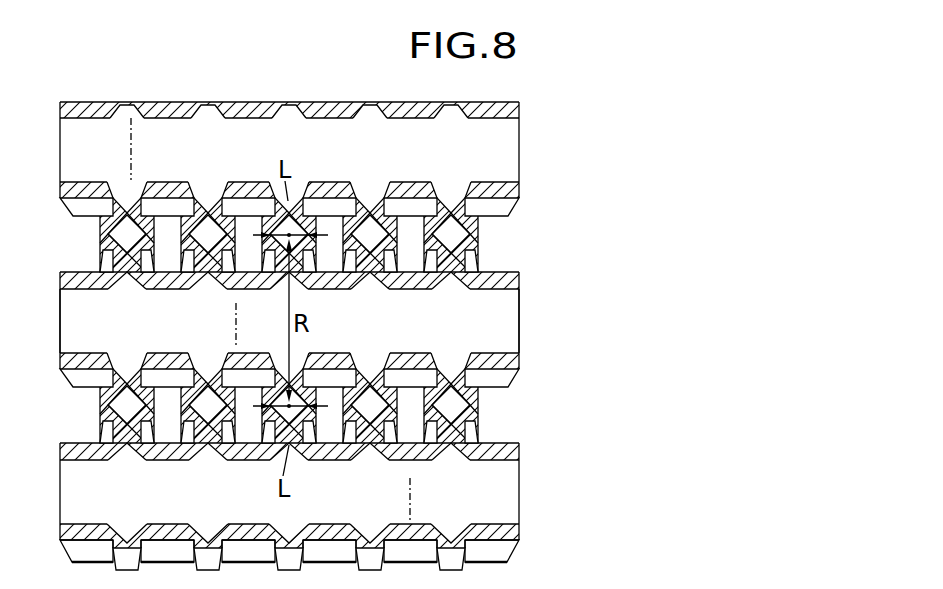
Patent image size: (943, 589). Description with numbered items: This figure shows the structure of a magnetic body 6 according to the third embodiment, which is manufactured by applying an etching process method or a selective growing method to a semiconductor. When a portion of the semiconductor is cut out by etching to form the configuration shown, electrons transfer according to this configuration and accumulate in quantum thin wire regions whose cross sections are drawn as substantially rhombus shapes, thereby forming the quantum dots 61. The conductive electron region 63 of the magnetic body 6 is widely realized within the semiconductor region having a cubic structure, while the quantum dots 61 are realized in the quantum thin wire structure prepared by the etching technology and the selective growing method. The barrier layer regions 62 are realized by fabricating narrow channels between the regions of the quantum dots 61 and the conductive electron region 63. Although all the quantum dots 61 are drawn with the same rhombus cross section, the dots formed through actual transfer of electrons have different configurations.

The magnetic body 6 is at (557, 160).
The quantum dot 61 is at (477, 399).
The barrier layer region 62 is at (470, 430).
The conductive electron region 63 is at (500, 316).